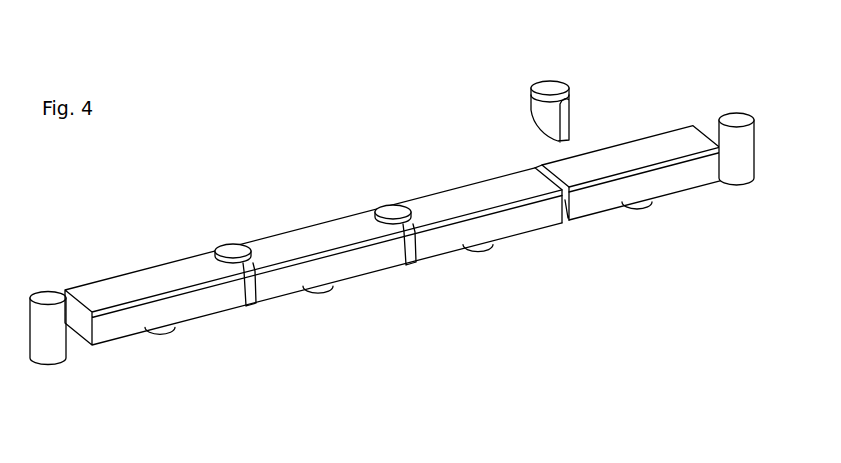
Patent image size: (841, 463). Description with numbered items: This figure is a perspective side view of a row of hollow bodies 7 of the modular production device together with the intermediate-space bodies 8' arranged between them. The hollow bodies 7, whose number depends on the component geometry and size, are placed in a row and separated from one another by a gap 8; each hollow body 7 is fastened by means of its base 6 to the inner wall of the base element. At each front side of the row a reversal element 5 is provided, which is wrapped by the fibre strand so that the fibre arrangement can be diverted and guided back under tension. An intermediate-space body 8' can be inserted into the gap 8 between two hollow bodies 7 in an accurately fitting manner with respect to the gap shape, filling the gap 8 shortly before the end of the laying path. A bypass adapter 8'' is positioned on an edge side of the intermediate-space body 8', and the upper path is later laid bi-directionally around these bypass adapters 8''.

The reversal element 5 is at (52, 297).
The base 6 is at (165, 333).
The hollow body 7 is at (122, 283).
The gap 8 is at (574, 225).
The intermediate-space body 8' is at (572, 76).
The bypass adapter 8'' is at (315, 242).